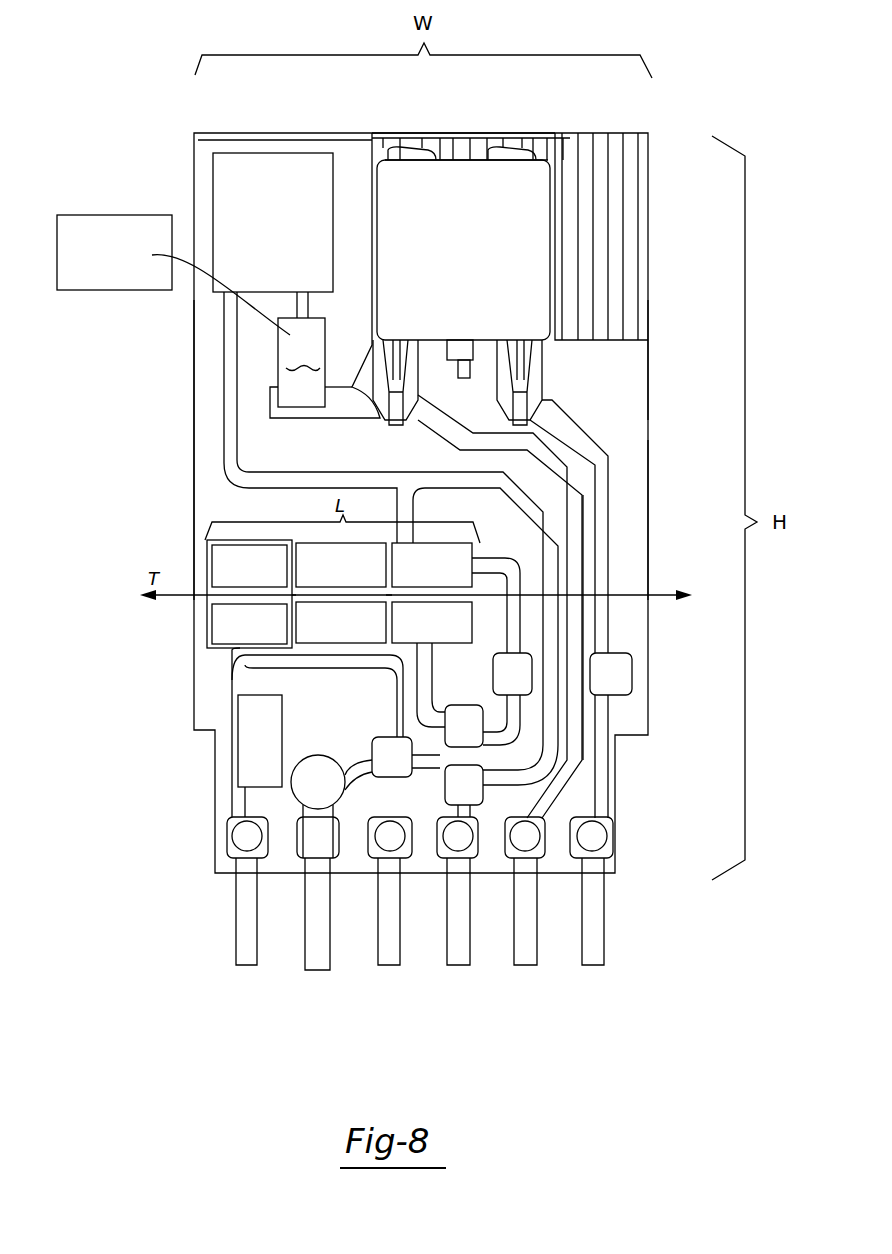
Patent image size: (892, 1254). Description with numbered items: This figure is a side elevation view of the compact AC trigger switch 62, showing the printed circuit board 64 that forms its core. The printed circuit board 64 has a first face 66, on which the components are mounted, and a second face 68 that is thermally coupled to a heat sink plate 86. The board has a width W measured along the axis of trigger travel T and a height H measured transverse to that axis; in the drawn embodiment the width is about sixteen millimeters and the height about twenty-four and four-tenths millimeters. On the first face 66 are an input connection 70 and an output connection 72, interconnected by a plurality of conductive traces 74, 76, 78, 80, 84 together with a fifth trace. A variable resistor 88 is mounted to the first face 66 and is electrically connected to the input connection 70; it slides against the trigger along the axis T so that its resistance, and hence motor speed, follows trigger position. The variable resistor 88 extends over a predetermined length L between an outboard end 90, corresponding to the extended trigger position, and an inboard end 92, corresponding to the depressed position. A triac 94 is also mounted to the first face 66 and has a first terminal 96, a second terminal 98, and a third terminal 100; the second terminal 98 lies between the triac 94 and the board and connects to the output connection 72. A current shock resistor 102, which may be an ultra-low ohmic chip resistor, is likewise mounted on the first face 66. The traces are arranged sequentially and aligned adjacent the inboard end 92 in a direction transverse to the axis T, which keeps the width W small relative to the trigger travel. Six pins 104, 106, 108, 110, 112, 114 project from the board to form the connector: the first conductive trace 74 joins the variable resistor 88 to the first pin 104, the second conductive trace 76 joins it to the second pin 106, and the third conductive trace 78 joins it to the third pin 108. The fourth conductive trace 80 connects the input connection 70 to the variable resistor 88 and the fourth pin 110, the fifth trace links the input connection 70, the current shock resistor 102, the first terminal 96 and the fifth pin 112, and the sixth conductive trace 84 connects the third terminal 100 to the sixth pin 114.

The trigger switch 62 is at (116, 129).
The printed circuit board 64 is at (650, 357).
The first face 66 is at (633, 501).
The second face 68 is at (188, 419).
The input connection 70 is at (263, 158).
The output connection 72 is at (588, 134).
The first conductive trace 74 is at (240, 688).
The second conductive trace 76 is at (408, 731).
The third conductive trace 78 is at (513, 590).
The fourth conductive trace 80 is at (220, 362).
The sixth conductive trace 84 is at (600, 613).
The heat sink plate 86 is at (658, 252).
The variable resistor 88 is at (335, 599).
The outboard end 90 is at (198, 550).
The inboard end 92 is at (486, 622).
The triac 94 is at (473, 256).
The first terminal 96 is at (395, 362).
The second terminal 98 is at (502, 146).
The third terminal 100 is at (517, 362).
The current shock resistor 102 is at (191, 311).
The first pin 104 is at (247, 845).
The second pin 106 is at (318, 845).
The third pin 108 is at (390, 845).
The fourth pin 110 is at (458, 845).
The fifth pin 112 is at (525, 845).
The sixth pin 114 is at (592, 845).